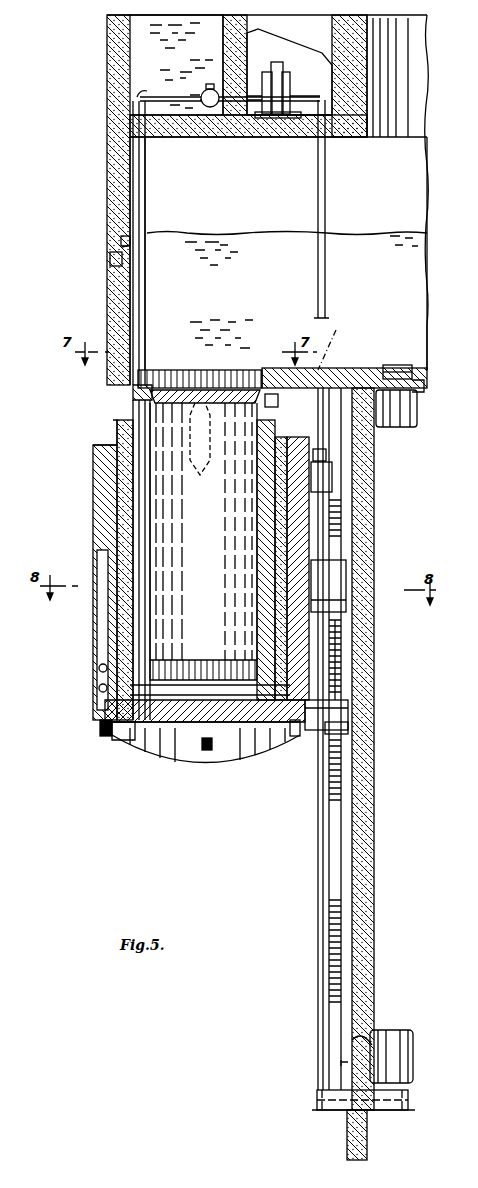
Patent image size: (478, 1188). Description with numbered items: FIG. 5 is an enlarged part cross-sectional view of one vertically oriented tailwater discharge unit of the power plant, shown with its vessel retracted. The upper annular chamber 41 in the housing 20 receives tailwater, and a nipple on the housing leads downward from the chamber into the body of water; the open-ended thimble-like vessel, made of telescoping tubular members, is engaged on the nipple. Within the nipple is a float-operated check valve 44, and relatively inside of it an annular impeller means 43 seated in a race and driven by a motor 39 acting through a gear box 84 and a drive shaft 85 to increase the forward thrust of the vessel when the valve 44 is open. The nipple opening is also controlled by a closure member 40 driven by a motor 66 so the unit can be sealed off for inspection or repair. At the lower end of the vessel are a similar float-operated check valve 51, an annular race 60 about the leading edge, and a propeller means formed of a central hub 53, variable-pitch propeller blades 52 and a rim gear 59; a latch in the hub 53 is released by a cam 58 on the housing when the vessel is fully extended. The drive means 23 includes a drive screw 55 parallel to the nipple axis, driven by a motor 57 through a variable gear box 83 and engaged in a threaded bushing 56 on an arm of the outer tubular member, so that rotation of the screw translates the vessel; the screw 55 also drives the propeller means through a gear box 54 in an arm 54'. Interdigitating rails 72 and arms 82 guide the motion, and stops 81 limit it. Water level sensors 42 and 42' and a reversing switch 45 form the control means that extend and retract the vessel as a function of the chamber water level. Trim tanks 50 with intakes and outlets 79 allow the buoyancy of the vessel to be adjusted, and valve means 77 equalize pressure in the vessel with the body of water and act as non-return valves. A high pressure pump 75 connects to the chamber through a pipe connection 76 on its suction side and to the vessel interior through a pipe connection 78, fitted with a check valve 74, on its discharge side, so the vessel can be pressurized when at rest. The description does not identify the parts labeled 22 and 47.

The housing 20 is at (374, 766).
The reservoir 22 is at (132, 55).
The drive means 23 is at (346, 826).
The motor 39 is at (416, 412).
The closure member 40 is at (330, 367).
The upper annular chamber 41 is at (253, 301).
The water level sensor 42 is at (93, 246).
The water level sensor 42' is at (90, 272).
The annular impeller means 43 is at (248, 368).
The check valve 44 is at (140, 398).
The reversing switch 45 is at (278, 402).
The cylinder 47 is at (223, 576).
The trim tanks 50 is at (100, 606).
The check valve 51 is at (135, 728).
The variable pitch propeller blades 52 is at (150, 738).
The central hub 53 is at (212, 750).
The gear box 54 is at (355, 712).
The arm 54' is at (372, 726).
The drive screw 55 is at (342, 643).
The bushing 56 is at (346, 586).
The motor 57 is at (414, 1047).
The cam 58 is at (364, 1040).
The rim gear 59 is at (100, 728).
The annular race 60 is at (297, 737).
The motor 66 is at (393, 365).
The rails 72 is at (320, 848).
The check valve 74 is at (203, 108).
The high pressure pump 75 is at (278, 82).
The pipe connection 76 is at (326, 198).
The valve means 77 is at (268, 428).
The pipe connection 78 is at (147, 209).
The intakes and outlets 79 is at (98, 670).
The stops 81 is at (327, 454).
The arms 82 is at (332, 474).
The variable gear box 83 is at (384, 1110).
The gear box 84 is at (425, 386).
The drive shaft 85 is at (332, 341).